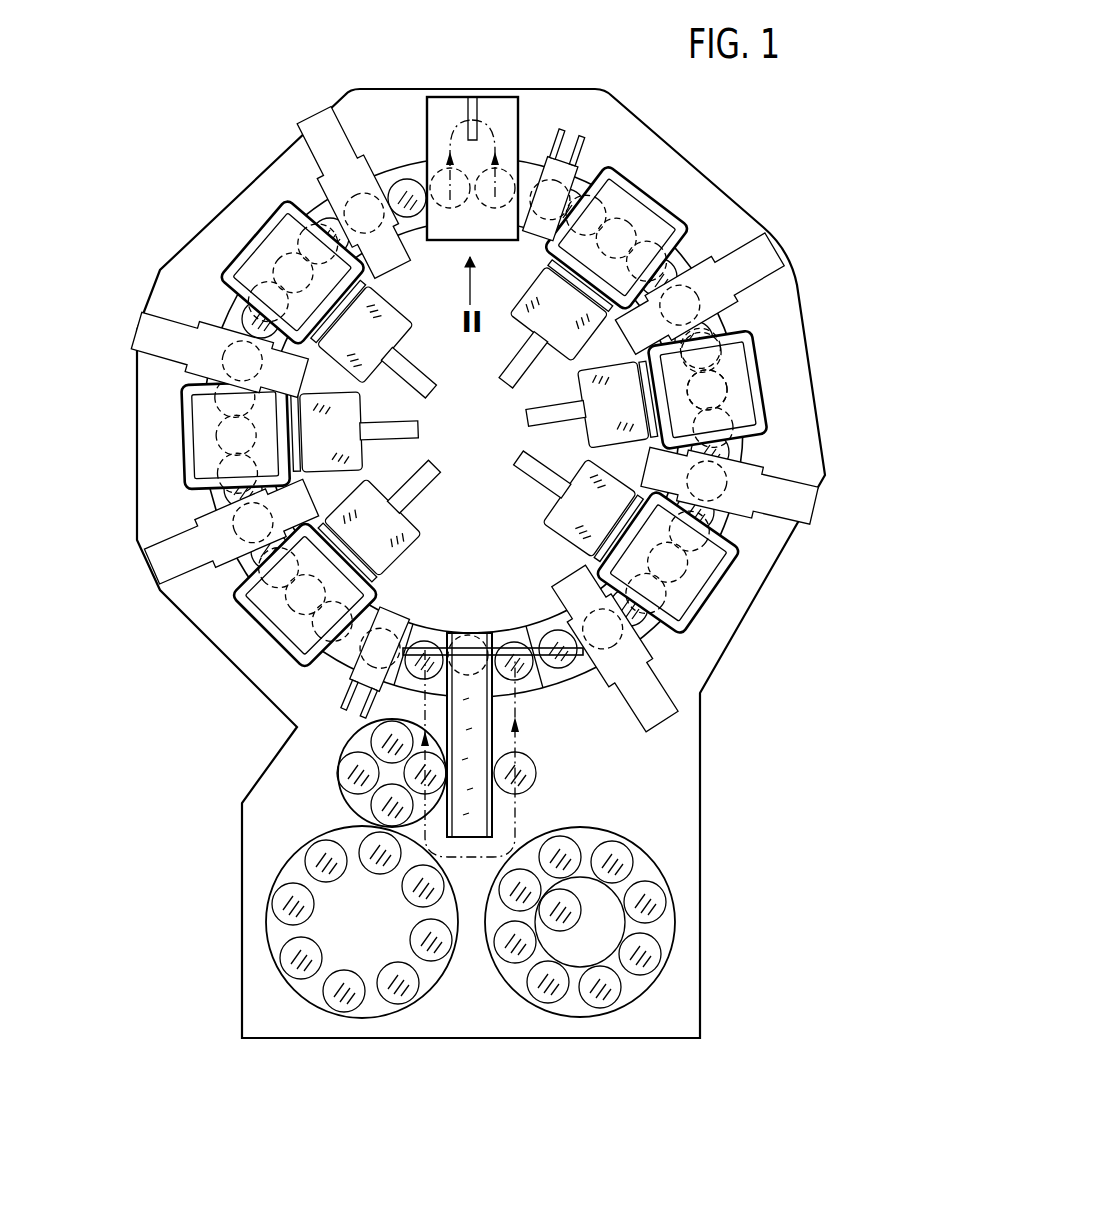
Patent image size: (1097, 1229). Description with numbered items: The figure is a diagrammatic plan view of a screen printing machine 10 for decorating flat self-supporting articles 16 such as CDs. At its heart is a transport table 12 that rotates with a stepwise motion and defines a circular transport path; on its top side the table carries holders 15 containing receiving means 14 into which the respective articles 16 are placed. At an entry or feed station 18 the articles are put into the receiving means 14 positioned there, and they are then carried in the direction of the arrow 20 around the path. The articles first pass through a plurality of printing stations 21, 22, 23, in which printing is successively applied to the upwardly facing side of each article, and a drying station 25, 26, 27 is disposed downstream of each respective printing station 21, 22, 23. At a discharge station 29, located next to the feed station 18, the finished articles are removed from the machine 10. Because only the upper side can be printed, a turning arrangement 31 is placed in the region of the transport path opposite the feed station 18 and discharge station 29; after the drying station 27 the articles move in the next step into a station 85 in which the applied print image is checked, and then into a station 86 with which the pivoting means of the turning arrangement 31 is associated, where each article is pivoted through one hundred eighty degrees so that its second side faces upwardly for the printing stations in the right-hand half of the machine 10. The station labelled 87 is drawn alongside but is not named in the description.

The screen printing machine 10 is at (720, 178).
The transport table 12 is at (717, 328).
The receiving means 14 is at (727, 375).
The holder 15 is at (740, 393).
The article 16 is at (718, 403).
The entry or feed station 18 is at (405, 700).
The arrow 20 is at (240, 640).
The printing station 21 is at (297, 635).
The printing station 22 is at (190, 445).
The printing station 23 is at (265, 247).
The drying station 25 is at (172, 568).
The drying station 26 is at (158, 310).
The drying station 27 is at (320, 128).
The discharge station 29 is at (523, 707).
The turning arrangement 31 is at (494, 84).
The station 85 is at (417, 135).
The station 86 is at (438, 150).
The transfer path 87 is at (508, 152).